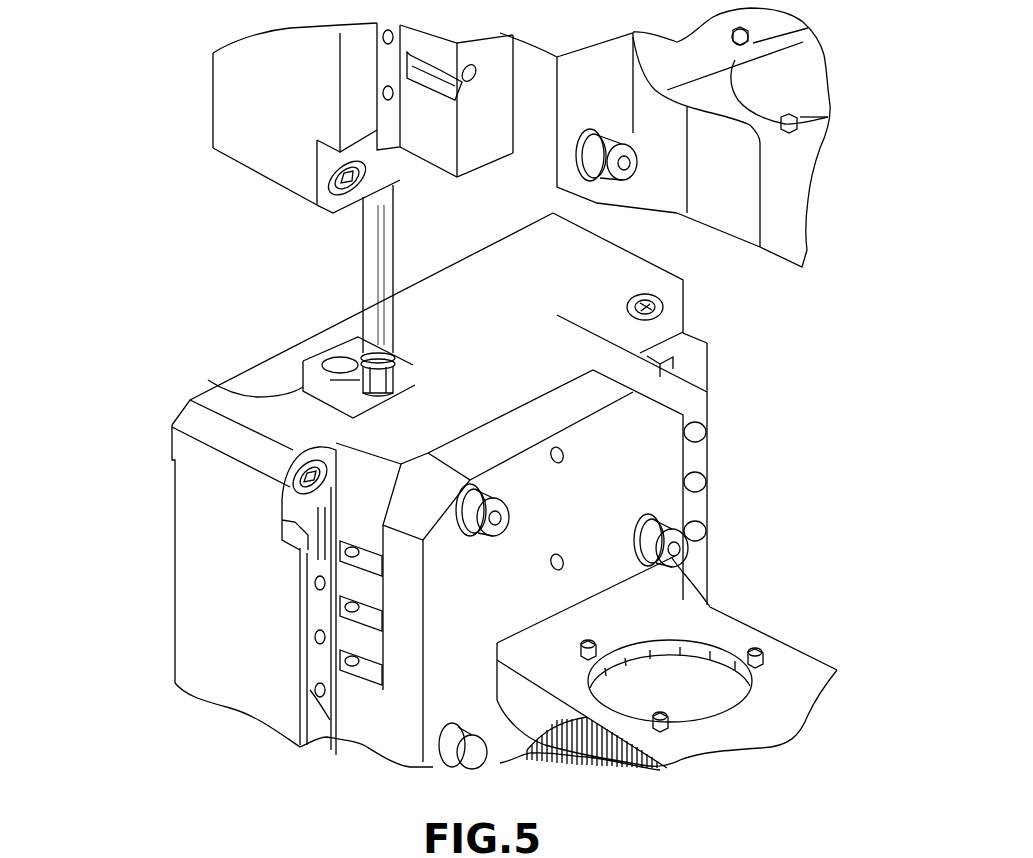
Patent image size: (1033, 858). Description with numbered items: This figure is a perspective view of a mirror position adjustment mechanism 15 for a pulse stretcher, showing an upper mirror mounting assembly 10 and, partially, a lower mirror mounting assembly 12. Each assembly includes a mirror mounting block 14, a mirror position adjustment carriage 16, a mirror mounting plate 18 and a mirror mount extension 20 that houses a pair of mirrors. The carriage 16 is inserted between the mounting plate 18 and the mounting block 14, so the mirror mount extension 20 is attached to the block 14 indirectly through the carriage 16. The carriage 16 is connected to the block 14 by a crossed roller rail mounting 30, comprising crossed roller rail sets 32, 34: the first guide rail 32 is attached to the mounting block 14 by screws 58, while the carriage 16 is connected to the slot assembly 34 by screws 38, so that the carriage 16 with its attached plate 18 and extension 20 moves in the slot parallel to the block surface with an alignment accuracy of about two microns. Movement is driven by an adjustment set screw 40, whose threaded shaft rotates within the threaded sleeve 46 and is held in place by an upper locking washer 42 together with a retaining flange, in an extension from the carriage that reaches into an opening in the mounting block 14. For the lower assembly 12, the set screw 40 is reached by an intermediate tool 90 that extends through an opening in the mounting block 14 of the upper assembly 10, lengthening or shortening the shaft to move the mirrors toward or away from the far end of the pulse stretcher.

The mirror mounting assembly 10 is at (190, 107).
The mirror mounting assembly 12 is at (612, 768).
The mirror mounting block 14 is at (255, 148).
The mirror position adjustment mechanism 15 is at (246, 283).
The mirror position adjustment carriage 16 is at (463, 147).
The mirror mounting plate 18 is at (573, 107).
The mirror mount extension 20 is at (770, 240).
The crossed roller rail mounting 30 is at (697, 364).
The first guide rail 32 is at (317, 617).
The slot assembly 34 is at (280, 497).
The screws 38 is at (343, 547).
The adjustment set screw 40 is at (405, 338).
The upper locking washer 42 is at (398, 366).
The sleeve 46 is at (212, 381).
The screws 58 is at (320, 697).
The intermediate tool 90 is at (373, 233).